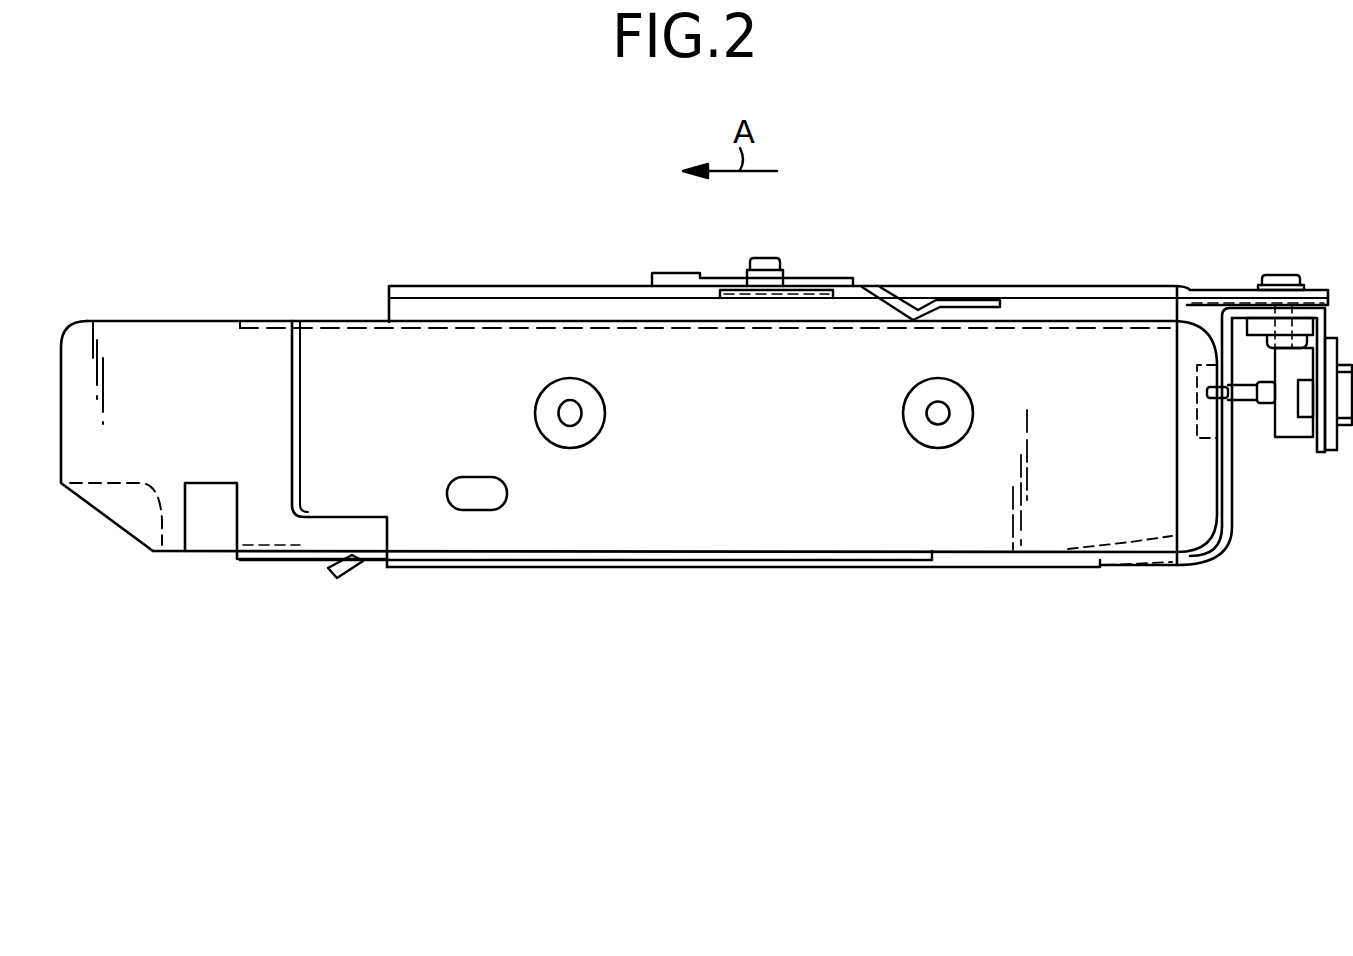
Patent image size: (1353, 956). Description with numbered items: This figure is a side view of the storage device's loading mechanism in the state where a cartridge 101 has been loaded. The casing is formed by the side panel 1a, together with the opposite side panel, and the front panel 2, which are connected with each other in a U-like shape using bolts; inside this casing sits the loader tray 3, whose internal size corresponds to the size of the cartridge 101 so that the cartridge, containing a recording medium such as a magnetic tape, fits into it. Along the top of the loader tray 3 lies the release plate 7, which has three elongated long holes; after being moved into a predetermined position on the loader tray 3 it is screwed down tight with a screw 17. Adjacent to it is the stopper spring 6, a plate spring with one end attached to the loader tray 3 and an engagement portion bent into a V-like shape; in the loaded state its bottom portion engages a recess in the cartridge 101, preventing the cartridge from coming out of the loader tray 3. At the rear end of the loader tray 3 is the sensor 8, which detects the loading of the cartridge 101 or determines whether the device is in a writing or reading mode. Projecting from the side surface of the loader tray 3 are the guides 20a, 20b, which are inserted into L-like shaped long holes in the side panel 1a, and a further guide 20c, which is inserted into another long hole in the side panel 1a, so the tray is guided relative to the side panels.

The cartridge 101 is at (163, 319).
The front panel 2 is at (291, 393).
The loader tray 3 is at (488, 286).
The release plate 7 is at (660, 274).
The screw 17 is at (762, 259).
The stopper spring 6 is at (973, 302).
The sensor 8 is at (1295, 425).
The guide 20a is at (580, 443).
The guide 20b is at (933, 440).
The guide 20c is at (473, 497).
The side panel 1a is at (1063, 515).